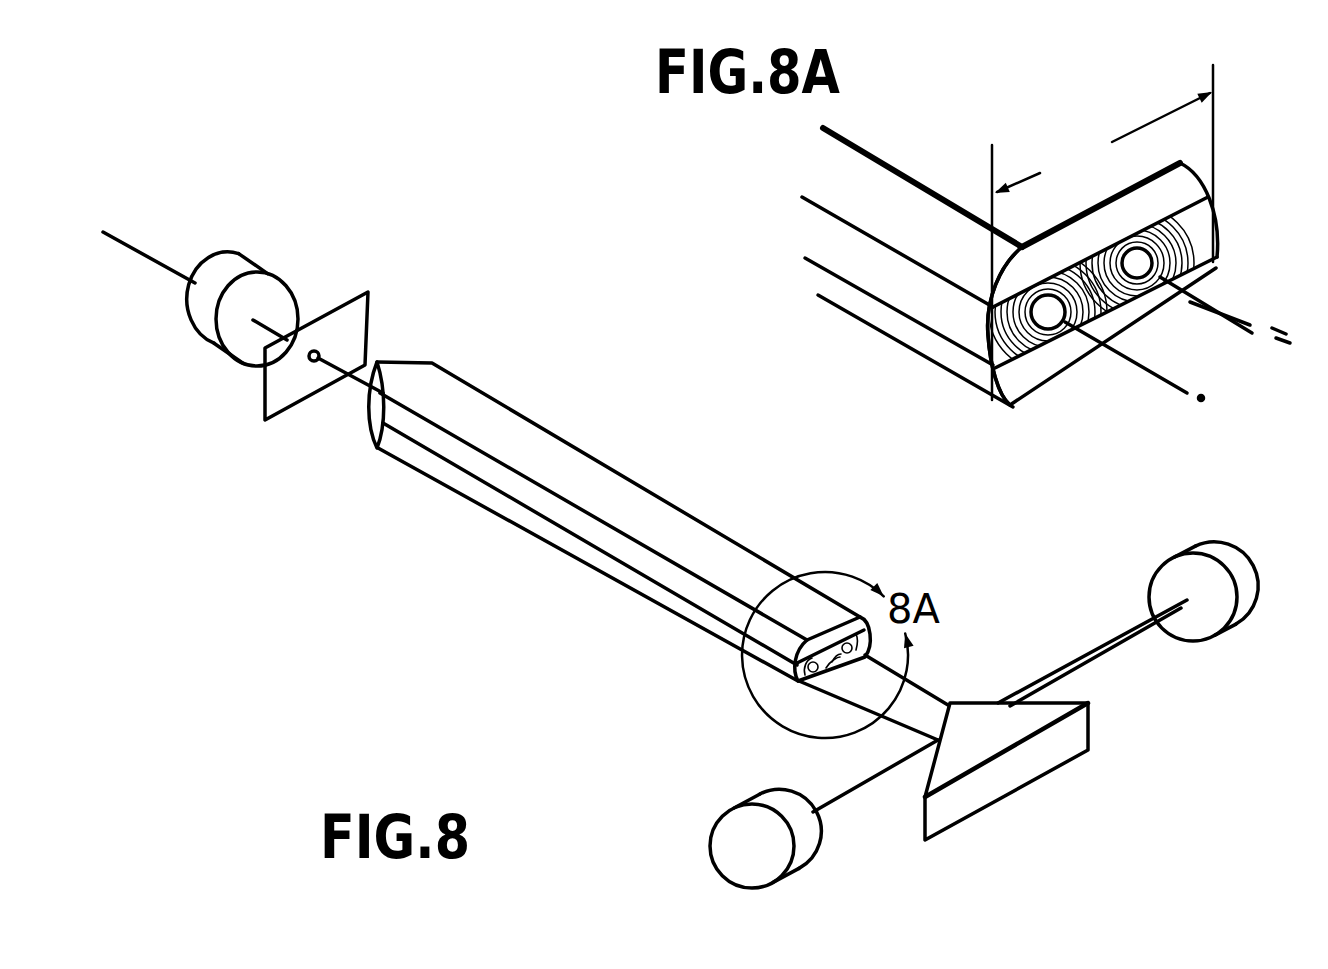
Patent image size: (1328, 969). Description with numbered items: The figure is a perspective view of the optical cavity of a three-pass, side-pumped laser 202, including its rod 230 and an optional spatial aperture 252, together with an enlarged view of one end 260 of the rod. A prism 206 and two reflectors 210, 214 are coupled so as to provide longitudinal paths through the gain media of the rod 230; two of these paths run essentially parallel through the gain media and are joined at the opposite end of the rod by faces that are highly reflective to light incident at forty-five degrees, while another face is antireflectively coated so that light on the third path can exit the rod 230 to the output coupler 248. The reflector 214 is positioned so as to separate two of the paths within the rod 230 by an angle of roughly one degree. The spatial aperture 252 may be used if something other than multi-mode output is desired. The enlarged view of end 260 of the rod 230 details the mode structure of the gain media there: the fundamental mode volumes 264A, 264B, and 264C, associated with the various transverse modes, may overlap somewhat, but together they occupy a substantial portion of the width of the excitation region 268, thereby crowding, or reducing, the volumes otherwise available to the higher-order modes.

In FIG. 8, the laser 202 is at (300, 177).
In FIG. 8, the output coupler 248 is at (203, 333).
In FIG. 8, the spatial aperture 252 is at (290, 408).
In FIG. 8, the rod 230 is at (627, 513).
In FIG. 8, the prism 206 is at (985, 737).
In FIG. 8, the reflector 210 is at (803, 865).
In FIG. 8, the reflector 214 is at (1233, 614).
In FIG. 8A, the end of rod 260 is at (1180, 163).
In FIG. 8A, the fundamental mode volume 264A is at (1049, 340).
In FIG. 8A, the fundamental mode volume 264B is at (1142, 297).
In FIG. 8A, the fundamental mode volume 264C is at (1199, 264).
In FIG. 8A, the excitation region 268 is at (987, 340).